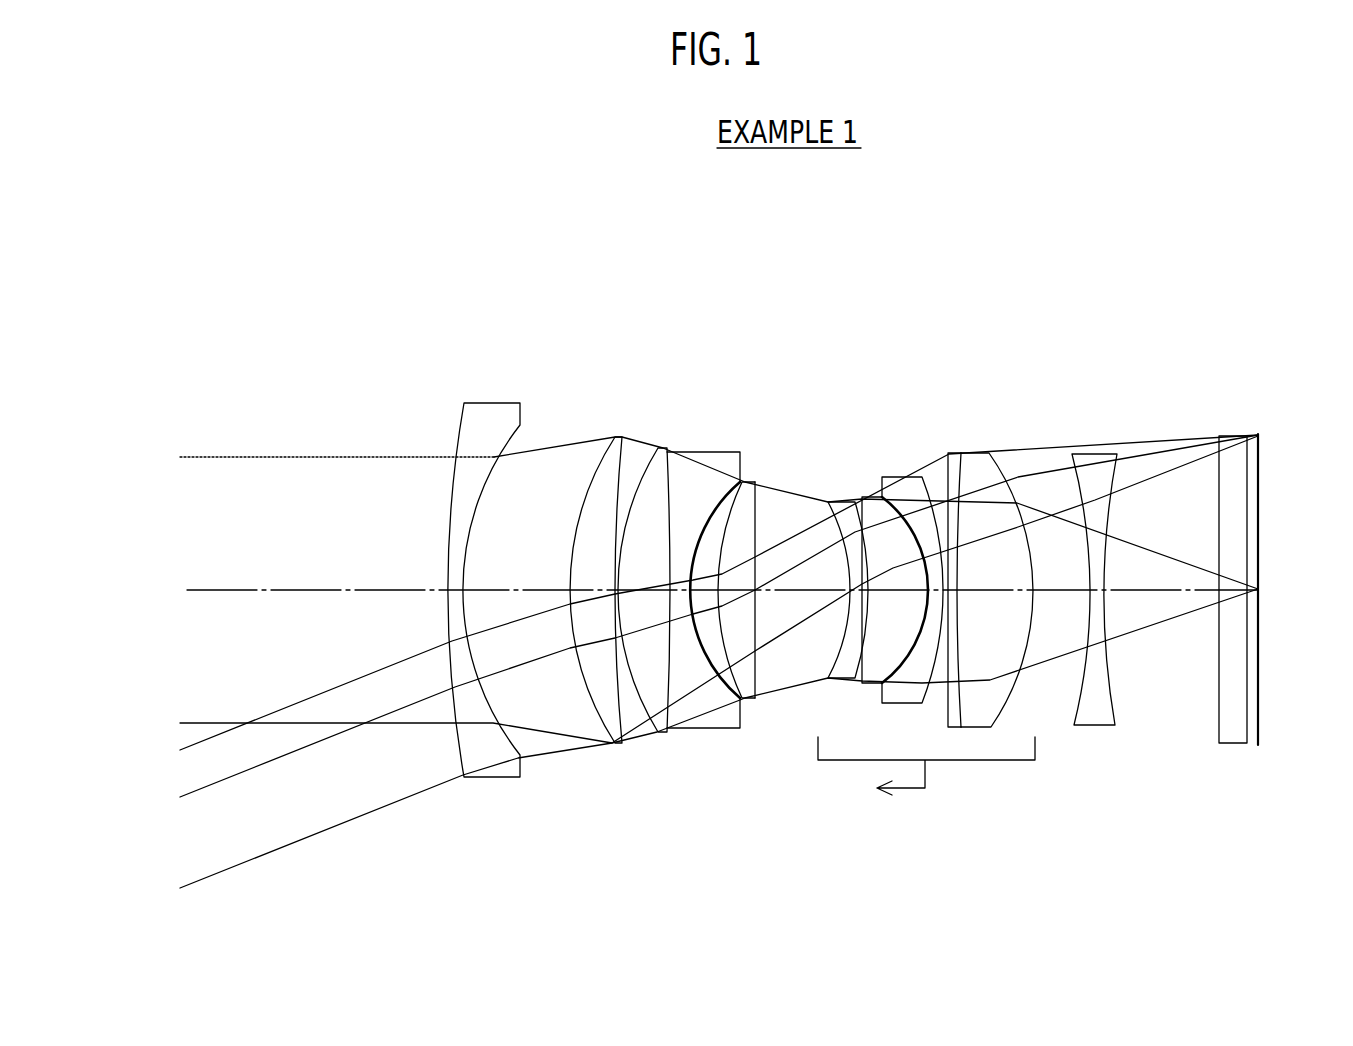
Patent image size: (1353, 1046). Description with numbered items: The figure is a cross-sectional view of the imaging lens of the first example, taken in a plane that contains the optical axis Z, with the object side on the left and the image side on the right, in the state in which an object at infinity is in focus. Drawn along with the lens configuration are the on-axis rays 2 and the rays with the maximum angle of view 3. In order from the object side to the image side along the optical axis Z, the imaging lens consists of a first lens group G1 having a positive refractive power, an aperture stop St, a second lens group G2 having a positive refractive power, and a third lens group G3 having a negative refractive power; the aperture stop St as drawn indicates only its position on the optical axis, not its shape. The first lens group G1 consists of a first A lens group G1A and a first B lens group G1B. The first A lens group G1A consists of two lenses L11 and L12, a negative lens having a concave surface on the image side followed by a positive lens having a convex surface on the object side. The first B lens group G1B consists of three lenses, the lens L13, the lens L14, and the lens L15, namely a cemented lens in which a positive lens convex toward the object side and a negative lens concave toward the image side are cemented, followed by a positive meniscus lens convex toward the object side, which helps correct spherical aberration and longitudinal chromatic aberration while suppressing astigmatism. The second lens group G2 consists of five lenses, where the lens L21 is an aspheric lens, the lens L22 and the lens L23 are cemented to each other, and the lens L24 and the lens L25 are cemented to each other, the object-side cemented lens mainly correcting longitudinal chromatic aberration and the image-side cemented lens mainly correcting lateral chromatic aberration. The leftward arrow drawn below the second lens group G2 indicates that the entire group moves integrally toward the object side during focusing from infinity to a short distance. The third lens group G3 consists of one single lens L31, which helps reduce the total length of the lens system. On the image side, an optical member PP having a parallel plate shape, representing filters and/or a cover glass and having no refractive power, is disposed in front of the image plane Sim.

The optical axis Z is at (290, 590).
The on-axis rays 2 is at (167, 453).
The rays with the maximum angle of view 3 is at (167, 748).
The first lens group G1 is at (748, 253).
The first A lens group G1A is at (623, 303).
The first B lens group G1B is at (748, 331).
The lens L11 is at (488, 403).
The lens L12 is at (617, 437).
The lens L13 is at (660, 447).
The lens L14 is at (707, 452).
The lens L15 is at (750, 482).
The aperture stop St is at (757, 511).
The second lens group G2 is at (1032, 326).
The lens L21 is at (846, 502).
The lens L22 is at (870, 497).
The lens L23 is at (900, 477).
The lens L24 is at (963, 453).
The lens L25 is at (990, 452).
The third lens group G3 is at (1115, 329).
The lens L31 is at (1095, 453).
The optical member PP is at (1229, 743).
The image plane Sim is at (1261, 718).